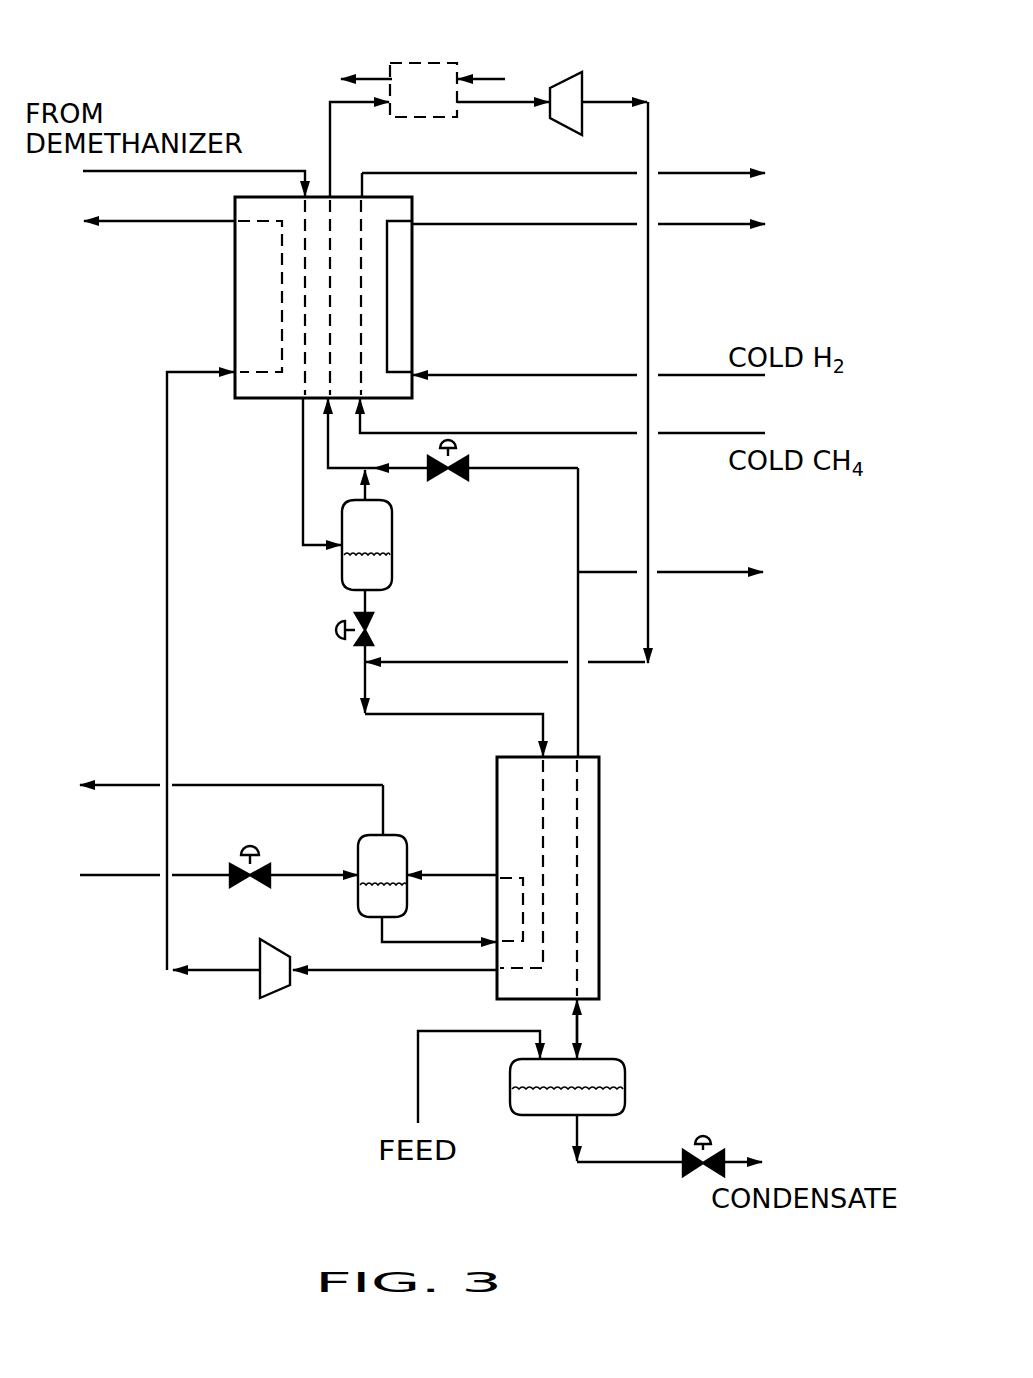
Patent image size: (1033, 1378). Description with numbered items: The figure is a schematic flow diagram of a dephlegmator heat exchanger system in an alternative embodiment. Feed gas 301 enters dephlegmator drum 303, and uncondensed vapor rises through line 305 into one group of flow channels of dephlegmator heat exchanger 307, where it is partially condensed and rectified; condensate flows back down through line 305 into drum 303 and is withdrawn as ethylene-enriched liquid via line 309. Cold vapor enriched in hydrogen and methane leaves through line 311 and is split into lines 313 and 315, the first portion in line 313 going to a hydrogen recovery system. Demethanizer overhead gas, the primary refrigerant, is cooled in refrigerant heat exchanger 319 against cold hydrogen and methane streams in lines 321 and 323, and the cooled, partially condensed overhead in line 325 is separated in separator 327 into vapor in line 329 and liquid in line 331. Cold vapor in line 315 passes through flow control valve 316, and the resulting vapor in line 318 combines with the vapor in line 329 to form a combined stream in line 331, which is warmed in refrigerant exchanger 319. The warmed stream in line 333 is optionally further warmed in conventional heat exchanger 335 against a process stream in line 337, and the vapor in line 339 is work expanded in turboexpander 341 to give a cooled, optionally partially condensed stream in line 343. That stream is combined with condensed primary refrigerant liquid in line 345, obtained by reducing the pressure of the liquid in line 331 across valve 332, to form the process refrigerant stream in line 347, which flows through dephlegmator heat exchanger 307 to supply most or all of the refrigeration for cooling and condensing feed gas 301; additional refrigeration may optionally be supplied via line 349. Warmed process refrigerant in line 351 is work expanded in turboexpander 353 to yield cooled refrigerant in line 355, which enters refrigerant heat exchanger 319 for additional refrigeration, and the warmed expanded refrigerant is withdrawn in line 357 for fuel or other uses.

The feed gas 301 is at (418, 1071).
The dephlegmator drum 303 is at (622, 1073).
The line 305 is at (582, 1026).
The dephlegmator heat exchanger 307 is at (600, 888).
The line 309 is at (733, 1160).
The line 311 is at (580, 721).
The line 313 is at (685, 572).
The line 315 is at (578, 535).
The flow control valve 316 is at (468, 464).
The line 318 is at (410, 470).
The refrigerant heat exchanger 319 is at (413, 300).
The line 321 is at (683, 374).
The line 323 is at (722, 433).
The line 325 is at (303, 455).
The separator 327 is at (392, 540).
The line 329 is at (378, 485).
The line 331 is at (330, 428).
The valve 332 is at (375, 624).
The line 333 is at (326, 100).
The conventional heat exchanger 335 is at (420, 63).
The line 337 is at (478, 79).
The line 339 is at (503, 104).
The turboexpander 341 is at (567, 71).
The line 343 is at (617, 100).
The line 345 is at (360, 655).
The line 347 is at (367, 686).
The line 349 is at (447, 942).
The line 351 is at (383, 972).
The turboexpander 353 is at (272, 998).
The line 355 is at (167, 617).
The line 357 is at (155, 223).